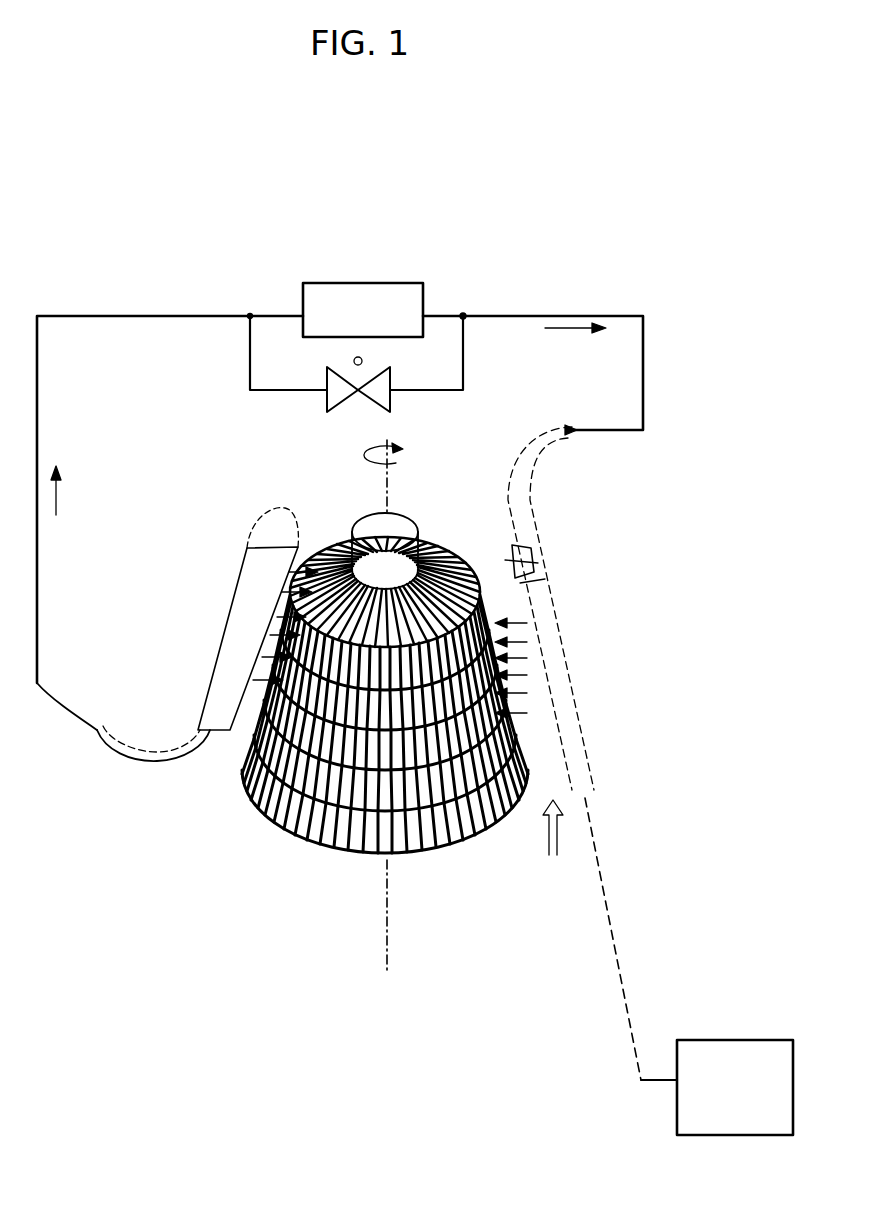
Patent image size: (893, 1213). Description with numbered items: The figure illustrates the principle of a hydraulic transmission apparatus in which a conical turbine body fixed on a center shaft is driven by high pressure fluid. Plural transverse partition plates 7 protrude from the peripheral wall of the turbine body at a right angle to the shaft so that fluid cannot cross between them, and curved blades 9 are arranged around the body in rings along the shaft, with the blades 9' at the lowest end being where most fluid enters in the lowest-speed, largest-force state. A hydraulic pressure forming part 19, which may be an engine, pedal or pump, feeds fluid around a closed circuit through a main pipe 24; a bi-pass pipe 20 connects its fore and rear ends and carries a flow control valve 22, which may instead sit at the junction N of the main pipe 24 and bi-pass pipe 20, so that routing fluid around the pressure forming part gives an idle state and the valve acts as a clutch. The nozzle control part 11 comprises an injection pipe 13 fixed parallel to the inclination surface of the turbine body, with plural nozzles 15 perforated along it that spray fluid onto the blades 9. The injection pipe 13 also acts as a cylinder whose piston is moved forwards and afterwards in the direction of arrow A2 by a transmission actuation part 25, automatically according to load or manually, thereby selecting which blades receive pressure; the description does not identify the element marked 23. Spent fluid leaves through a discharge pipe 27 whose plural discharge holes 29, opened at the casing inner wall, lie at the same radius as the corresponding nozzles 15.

The transverse partition plates 7 is at (233, 733).
The blades 9 is at (375, 705).
The blades installed at the lowest end of the turbine body 9' is at (375, 823).
The nozzle control part 11 is at (582, 703).
The injection pipe 13 is at (550, 660).
The nozzles 15 is at (540, 580).
The hydraulic pressure forming part 19 is at (390, 302).
The bi-pass pipe 20 is at (297, 393).
The flow control valve 22 is at (343, 405).
The connection line 23 is at (600, 808).
The main pipe 24 is at (177, 320).
The transmission actuation part 25 is at (742, 1082).
The discharge pipe 27 is at (186, 673).
The discharge holes 29 is at (243, 587).
The junction N is at (248, 304).
The arrow A2 is at (549, 850).